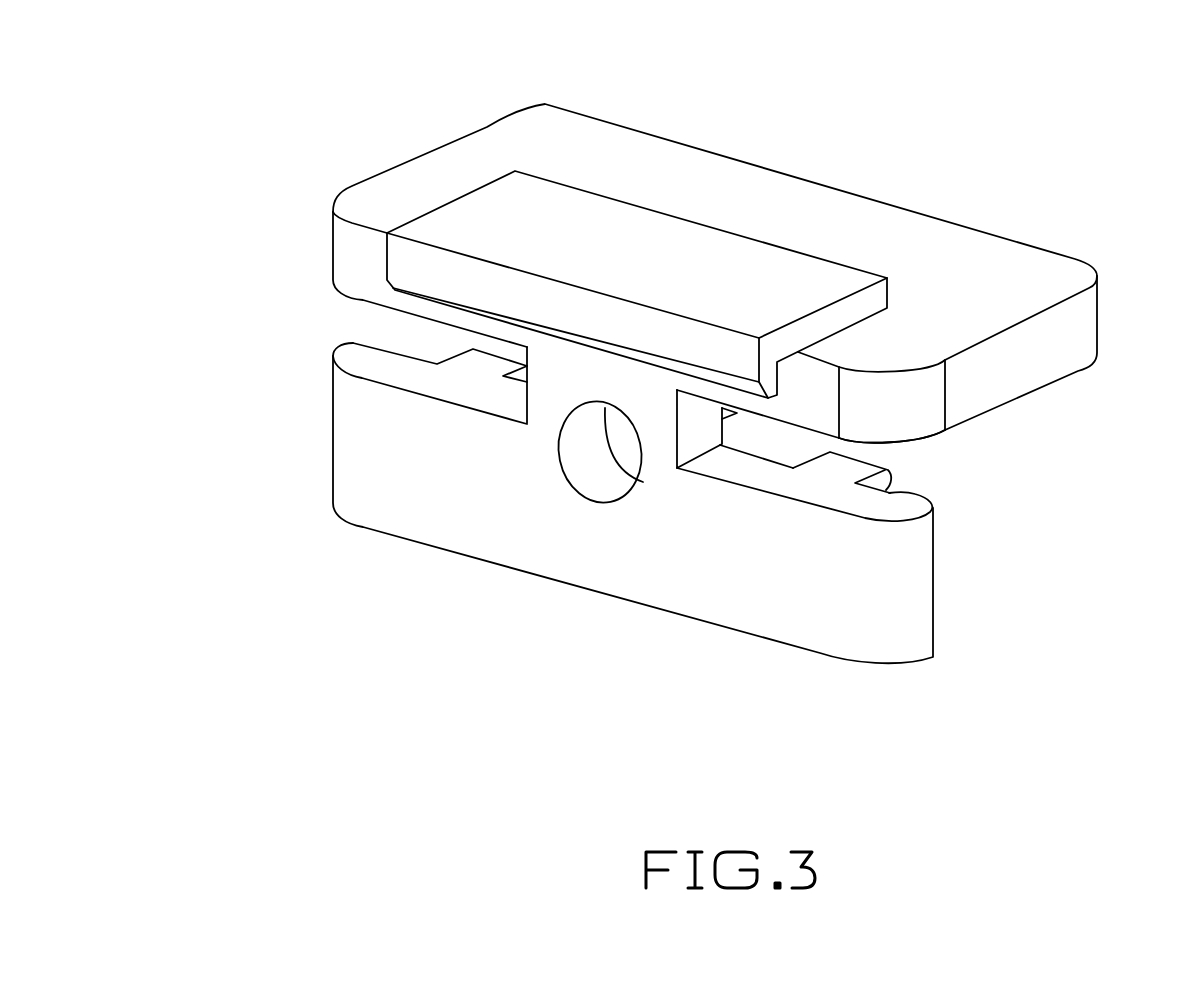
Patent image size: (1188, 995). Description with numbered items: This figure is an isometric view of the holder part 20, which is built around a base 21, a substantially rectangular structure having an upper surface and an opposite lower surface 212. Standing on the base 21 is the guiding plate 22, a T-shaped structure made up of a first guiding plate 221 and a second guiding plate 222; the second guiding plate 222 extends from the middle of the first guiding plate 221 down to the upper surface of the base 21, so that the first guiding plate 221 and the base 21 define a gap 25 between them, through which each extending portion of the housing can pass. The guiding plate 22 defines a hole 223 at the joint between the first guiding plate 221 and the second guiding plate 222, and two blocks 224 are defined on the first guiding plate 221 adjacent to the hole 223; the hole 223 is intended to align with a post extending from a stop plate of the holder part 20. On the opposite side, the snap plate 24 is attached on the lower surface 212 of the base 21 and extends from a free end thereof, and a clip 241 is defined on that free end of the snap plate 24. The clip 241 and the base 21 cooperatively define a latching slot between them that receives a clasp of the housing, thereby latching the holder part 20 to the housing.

The holder part 20 is at (323, 148).
The base 21 is at (1053, 345).
The lower surface 212 is at (802, 212).
The snap plate 24 is at (533, 238).
The clip 241 is at (438, 268).
The guiding plate 22 is at (745, 757).
The first guiding plate 221 is at (833, 588).
The second guiding plate 222 is at (697, 423).
The hole 223 is at (593, 450).
The block 224 is at (880, 478).
The gap 25 is at (935, 462).